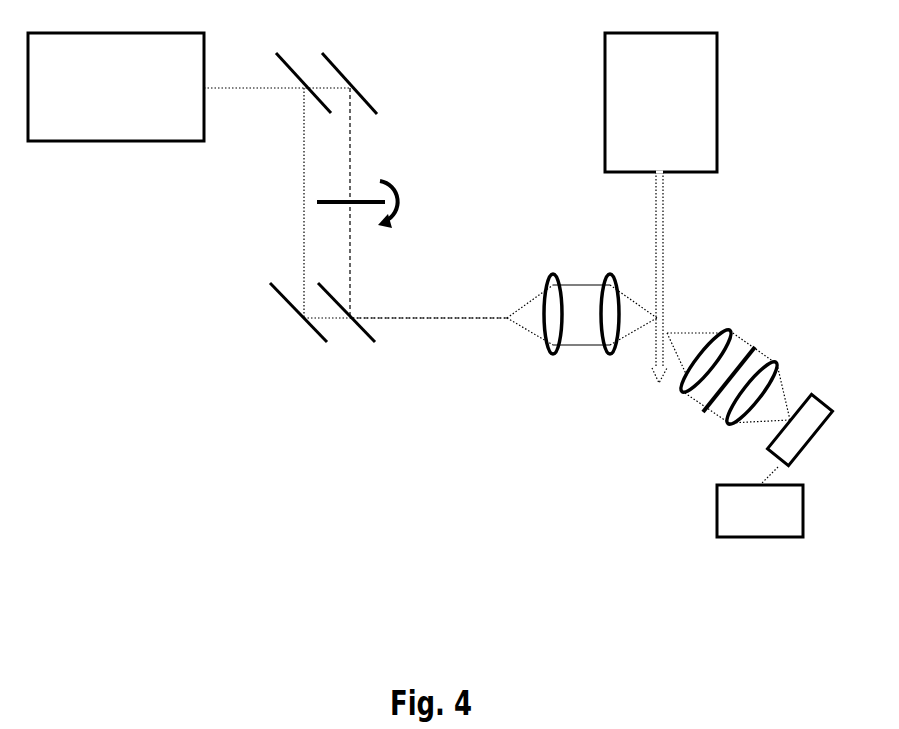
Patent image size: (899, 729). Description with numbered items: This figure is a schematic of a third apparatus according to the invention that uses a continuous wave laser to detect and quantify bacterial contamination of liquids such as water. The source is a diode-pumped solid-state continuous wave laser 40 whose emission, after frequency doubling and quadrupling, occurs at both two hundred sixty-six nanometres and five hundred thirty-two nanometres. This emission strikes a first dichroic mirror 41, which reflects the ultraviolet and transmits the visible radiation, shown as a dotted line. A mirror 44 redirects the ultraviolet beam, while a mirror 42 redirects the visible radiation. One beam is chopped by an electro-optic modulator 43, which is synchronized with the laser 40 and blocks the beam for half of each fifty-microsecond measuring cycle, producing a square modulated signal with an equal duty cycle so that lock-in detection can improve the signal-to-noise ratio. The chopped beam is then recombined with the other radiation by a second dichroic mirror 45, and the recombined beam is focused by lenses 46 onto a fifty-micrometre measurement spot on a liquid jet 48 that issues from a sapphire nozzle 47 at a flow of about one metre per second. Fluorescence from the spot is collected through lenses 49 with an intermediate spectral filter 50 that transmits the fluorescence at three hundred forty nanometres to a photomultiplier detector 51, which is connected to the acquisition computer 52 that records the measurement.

The laser 40 is at (116, 87).
The first dichroic mirror 41 is at (303, 59).
The mirror 42 is at (349, 60).
The electro-optic modulator 43 is at (385, 204).
The mirror 44 is at (298, 334).
The second dichroic mirror 45 is at (346, 334).
The lenses 46 is at (581, 275).
The sapphire nozzle 47 is at (661, 102).
The liquid jet 48 is at (637, 293).
The lenses 49 is at (737, 357).
The spectral filter 50 is at (713, 399).
The photomultiplier detector 51 is at (809, 433).
The acquisition computer 52 is at (760, 511).